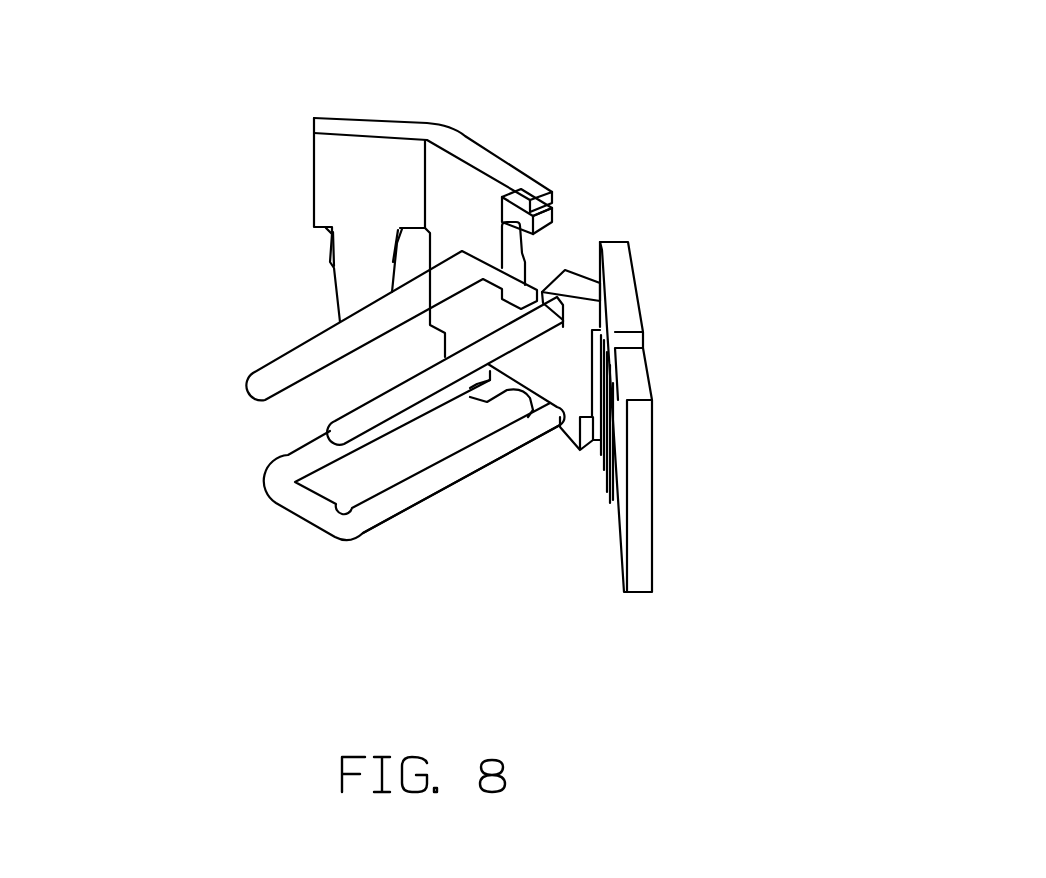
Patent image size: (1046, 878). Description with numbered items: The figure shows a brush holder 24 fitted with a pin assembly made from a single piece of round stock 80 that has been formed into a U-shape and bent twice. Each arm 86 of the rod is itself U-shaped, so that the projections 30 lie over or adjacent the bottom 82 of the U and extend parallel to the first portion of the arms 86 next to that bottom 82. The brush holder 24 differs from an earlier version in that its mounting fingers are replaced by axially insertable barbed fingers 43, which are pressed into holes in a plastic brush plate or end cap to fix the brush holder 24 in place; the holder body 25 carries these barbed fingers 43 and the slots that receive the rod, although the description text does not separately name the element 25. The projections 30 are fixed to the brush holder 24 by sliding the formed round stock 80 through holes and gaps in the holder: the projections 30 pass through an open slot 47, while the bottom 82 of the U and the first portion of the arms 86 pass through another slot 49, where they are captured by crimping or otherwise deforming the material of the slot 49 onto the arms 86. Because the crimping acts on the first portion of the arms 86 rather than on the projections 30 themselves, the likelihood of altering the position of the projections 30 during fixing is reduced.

The brush holder 24 is at (687, 245).
The insulative housing body 25 is at (469, 203).
The projections 30 is at (282, 379).
The barbed fingers 43 is at (357, 274).
The open slot 47 is at (515, 292).
The slot 49 is at (538, 393).
The round stock 80 is at (288, 493).
The bottom 82 is at (305, 505).
The arms 86 is at (405, 504).